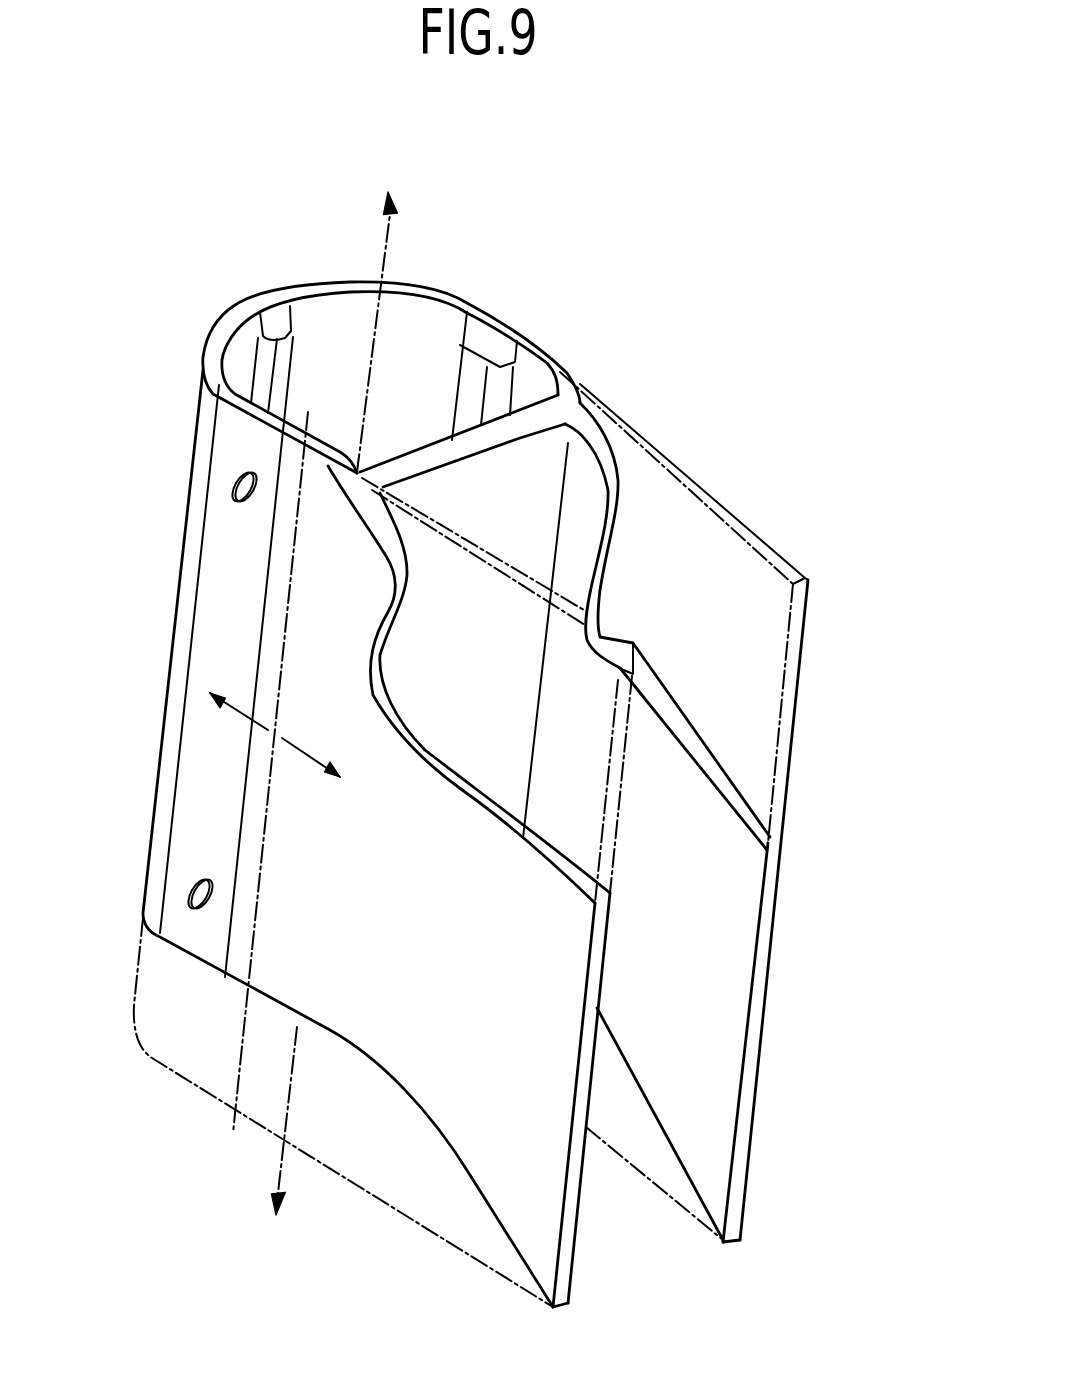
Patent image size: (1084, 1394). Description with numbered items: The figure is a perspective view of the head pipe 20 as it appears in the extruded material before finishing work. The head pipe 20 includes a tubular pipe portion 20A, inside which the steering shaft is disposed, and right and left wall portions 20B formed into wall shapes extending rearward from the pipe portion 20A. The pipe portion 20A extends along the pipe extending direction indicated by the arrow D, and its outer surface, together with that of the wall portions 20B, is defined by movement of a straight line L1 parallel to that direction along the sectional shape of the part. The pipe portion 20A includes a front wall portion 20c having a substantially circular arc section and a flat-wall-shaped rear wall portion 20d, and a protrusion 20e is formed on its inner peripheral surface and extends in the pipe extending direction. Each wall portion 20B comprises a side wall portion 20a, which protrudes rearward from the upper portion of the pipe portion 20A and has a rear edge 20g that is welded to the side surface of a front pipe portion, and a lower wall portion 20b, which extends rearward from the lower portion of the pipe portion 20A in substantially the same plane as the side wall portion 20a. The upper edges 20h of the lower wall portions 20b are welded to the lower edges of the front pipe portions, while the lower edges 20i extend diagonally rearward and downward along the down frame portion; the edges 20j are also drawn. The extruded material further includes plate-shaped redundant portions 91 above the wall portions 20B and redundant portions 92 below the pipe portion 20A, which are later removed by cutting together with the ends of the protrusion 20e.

The head pipe 20 is at (579, 276).
The pipe portion 20A is at (321, 255).
The wall portions 20B is at (760, 778).
The side wall portion 20a is at (586, 490).
The lower wall portion 20b is at (708, 1098).
The front wall portion 20c is at (237, 362).
The rear wall portion 20d is at (455, 448).
The protrusion 20e is at (463, 388).
The rear edges 20g is at (597, 552).
The upper edges 20h is at (677, 742).
The lower edges 20i is at (657, 1125).
The side end edge 20j is at (600, 978).
The redundant portions 91 is at (753, 530).
The redundant portions 92 is at (167, 1072).
The arrow D is at (383, 248).
The straight line L1 is at (267, 812).